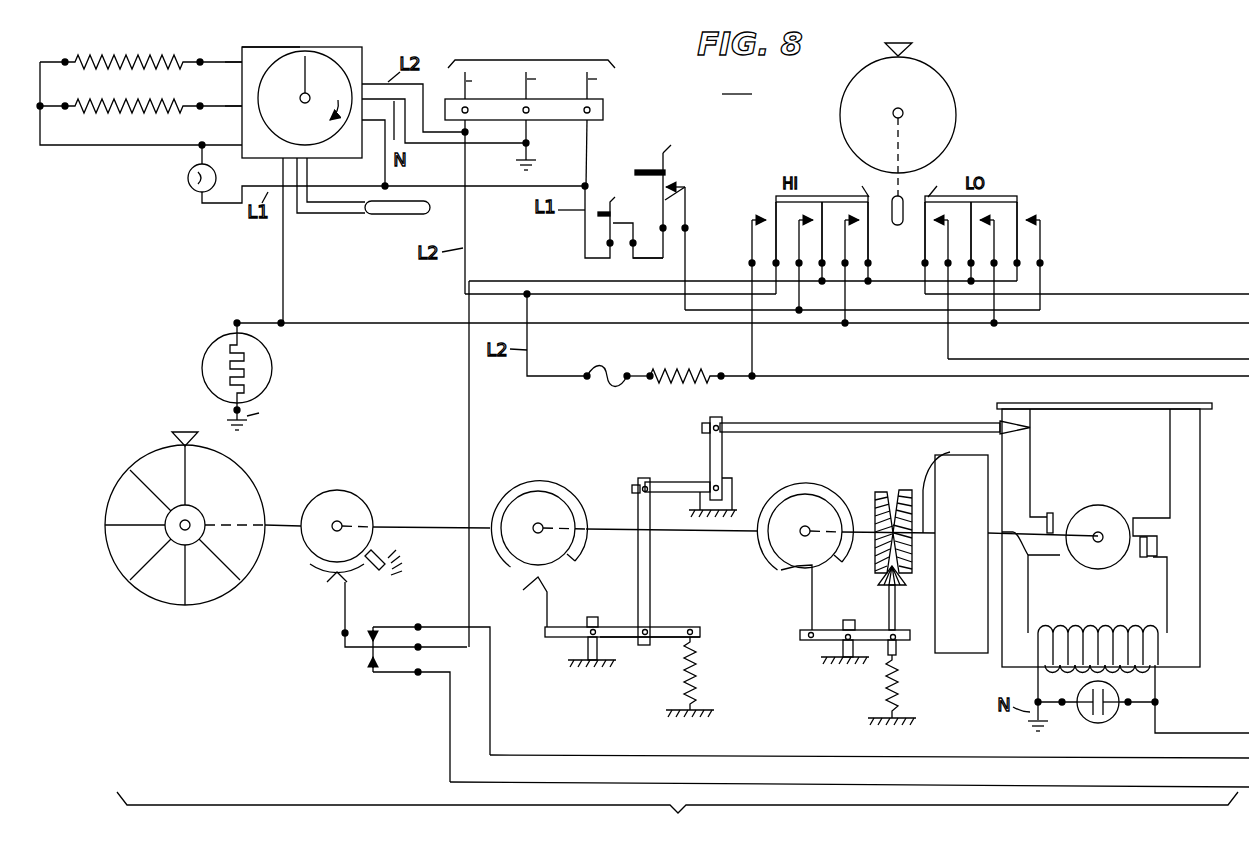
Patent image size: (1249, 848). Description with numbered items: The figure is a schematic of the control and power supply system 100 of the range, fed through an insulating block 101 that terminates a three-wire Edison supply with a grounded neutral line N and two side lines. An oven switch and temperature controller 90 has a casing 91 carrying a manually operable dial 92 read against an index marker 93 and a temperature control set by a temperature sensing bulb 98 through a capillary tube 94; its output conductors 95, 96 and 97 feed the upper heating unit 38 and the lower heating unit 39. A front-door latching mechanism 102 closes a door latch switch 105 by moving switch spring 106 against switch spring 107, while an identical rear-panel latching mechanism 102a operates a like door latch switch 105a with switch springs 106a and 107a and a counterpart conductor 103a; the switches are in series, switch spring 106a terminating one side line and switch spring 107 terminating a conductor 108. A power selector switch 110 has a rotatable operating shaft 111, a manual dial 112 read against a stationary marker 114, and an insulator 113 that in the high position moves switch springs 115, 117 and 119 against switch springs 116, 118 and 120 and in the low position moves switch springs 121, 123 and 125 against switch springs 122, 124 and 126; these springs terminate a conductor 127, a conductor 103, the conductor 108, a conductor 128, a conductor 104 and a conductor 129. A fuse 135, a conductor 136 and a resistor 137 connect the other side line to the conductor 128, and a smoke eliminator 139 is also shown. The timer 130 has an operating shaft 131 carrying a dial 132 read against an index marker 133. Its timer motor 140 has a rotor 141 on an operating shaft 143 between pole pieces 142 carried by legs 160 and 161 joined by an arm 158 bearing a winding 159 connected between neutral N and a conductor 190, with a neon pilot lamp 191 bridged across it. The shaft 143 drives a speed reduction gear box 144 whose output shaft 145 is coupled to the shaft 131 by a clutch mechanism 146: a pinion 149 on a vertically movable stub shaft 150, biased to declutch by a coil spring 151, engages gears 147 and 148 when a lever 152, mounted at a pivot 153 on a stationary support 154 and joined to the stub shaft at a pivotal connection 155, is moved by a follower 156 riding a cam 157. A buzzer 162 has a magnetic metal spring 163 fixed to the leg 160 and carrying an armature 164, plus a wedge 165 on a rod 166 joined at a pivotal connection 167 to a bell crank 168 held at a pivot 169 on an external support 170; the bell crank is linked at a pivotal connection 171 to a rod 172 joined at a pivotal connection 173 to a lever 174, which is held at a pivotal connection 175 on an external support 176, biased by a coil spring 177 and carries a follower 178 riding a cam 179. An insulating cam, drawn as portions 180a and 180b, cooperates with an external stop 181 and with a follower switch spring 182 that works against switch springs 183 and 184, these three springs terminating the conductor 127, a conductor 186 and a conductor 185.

The upper heating unit 38 is at (105, 60).
The lower heating unit 39 is at (95, 104).
The oven switch and temperature controller 90 is at (358, 48).
The casing 91 is at (258, 50).
The manually operable dial 92 is at (262, 112).
The index marker 93 is at (305, 52).
The capillary tube 94 is at (330, 216).
The conductor 95 is at (222, 62).
The conductor 96 is at (222, 106).
The conductor 97 is at (127, 147).
The temperature sensing bulb 98 is at (389, 216).
The control and power supply system 100 is at (737, 83).
The insulating block 101 is at (604, 112).
The latching mechanism 102 is at (647, 168).
The latching mechanism 102a is at (601, 210).
The conductor 103 is at (280, 257).
The conductor 103a is at (645, 260).
The conductor 104 is at (1168, 294).
The door latch switch 105 is at (672, 170).
The door latch switch 105a is at (615, 212).
The switch spring 106 is at (686, 188).
The switch spring 106a is at (613, 222).
The switch spring 107 is at (686, 211).
The switch spring 107a is at (633, 225).
The conductor 108 is at (686, 253).
The power selector switch 110 is at (950, 152).
The rotatable operating shaft 111 is at (895, 146).
The manual dial 112 is at (853, 79).
The insulator 113 is at (892, 198).
The stationary marker 114 is at (913, 48).
The high power switch spring 115 is at (871, 228).
The high power switch spring 116 is at (848, 228).
The high power switch spring 117 is at (825, 228).
The high power switch spring 118 is at (802, 228).
The high power switch spring 119 is at (779, 228).
The high power switch spring 120 is at (756, 228).
The low power switch spring 121 is at (933, 228).
The low power switch spring 122 is at (956, 228).
The low power switch spring 123 is at (979, 228).
The low power switch spring 124 is at (1002, 228).
The low power switch spring 125 is at (1025, 228).
The low power switch spring 126 is at (1048, 228).
The conductor 127 is at (534, 281).
The conductor 128 is at (753, 342).
The conductor 129 is at (1168, 359).
The timer 130 is at (677, 818).
The operating shaft 131 is at (283, 524).
The manually operable dial 132 is at (228, 484).
The stationary index marker 133 is at (176, 432).
The fuse 135 is at (603, 370).
The conductor 136 is at (640, 378).
The resistor 137 is at (700, 370).
The smoke eliminator 139 is at (273, 373).
The timer motor 140 is at (1097, 462).
The rotor 141 is at (1107, 511).
The pole pieces 142 is at (1160, 556).
The operating shaft 143 is at (1030, 562).
The speed reduction gear box 144 is at (955, 654).
The output shaft 145 is at (950, 484).
The clutch mechanism 146 is at (898, 489).
The gear 147 is at (873, 480).
The gear 148 is at (876, 512).
The pinion 149 is at (878, 585).
The stub shaft 150 is at (896, 597).
The coil spring 151 is at (901, 693).
The lever 152 is at (805, 632).
The pivot 153 is at (855, 625).
The stationary support 154 is at (838, 650).
The pivotal connection 155 is at (898, 648).
The follower 156 is at (810, 592).
The cam 157 is at (801, 497).
The arm 158 is at (1020, 648).
The winding 159 is at (1140, 633).
The leg 160 is at (1190, 514).
The leg 161 is at (1025, 505).
The buzzer 162 is at (1014, 400).
The metal spring 163 is at (1095, 405).
The armature 164 is at (1032, 420).
The wedge 165 is at (998, 426).
The rod 166 is at (752, 425).
The pivotal connection 167 is at (712, 426).
The bell crank 168 is at (677, 483).
The pivot 169 is at (723, 482).
The external support 170 is at (733, 496).
The pivotal connection 171 is at (640, 484).
The rod 172 is at (651, 536).
The pivotal connection 173 is at (648, 629).
The lever 174 is at (572, 627).
The pivotal connection 175 is at (595, 629).
The external support 176 is at (586, 649).
The coil spring 177 is at (700, 674).
The follower 178 is at (555, 593).
The cam 179 is at (541, 505).
The contact 180a is at (386, 556).
The contact arm 180b is at (310, 553).
The external stop 181 is at (397, 609).
The follower switch spring 182 is at (410, 647).
The switch spring 183 is at (410, 627).
The switch spring 184 is at (410, 672).
The conductor 185 is at (506, 782).
The conductor 186 is at (506, 755).
The conductor 190 is at (1220, 733).
The pilot lamp 191 is at (1086, 719).